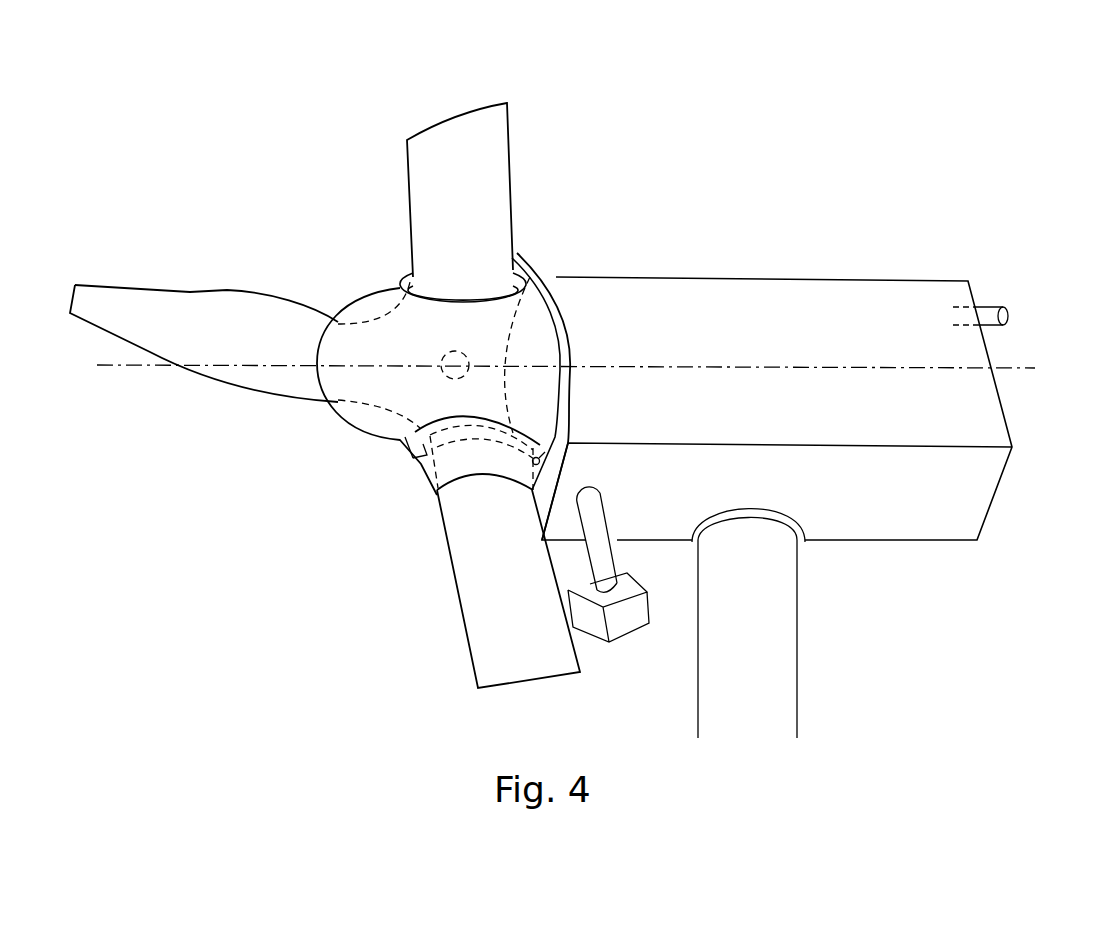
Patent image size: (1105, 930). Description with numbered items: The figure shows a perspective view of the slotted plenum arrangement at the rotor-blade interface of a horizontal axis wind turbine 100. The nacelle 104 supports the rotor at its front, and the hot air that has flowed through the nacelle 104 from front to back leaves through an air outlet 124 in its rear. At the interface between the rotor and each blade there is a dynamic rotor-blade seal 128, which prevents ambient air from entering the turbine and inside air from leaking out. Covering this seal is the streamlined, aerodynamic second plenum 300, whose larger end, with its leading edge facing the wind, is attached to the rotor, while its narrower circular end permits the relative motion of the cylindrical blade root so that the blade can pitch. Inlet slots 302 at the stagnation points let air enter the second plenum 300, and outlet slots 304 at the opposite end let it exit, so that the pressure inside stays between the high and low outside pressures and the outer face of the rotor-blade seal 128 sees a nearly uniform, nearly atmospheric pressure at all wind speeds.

The wind turbine 100 is at (828, 195).
The nacelle 104 is at (661, 280).
The air outlet 124 is at (988, 300).
The rotor-blade seal 128 is at (442, 425).
The second plenum 300 is at (451, 490).
The inlet slots 302 is at (394, 468).
The outlet slots 304 is at (556, 464).